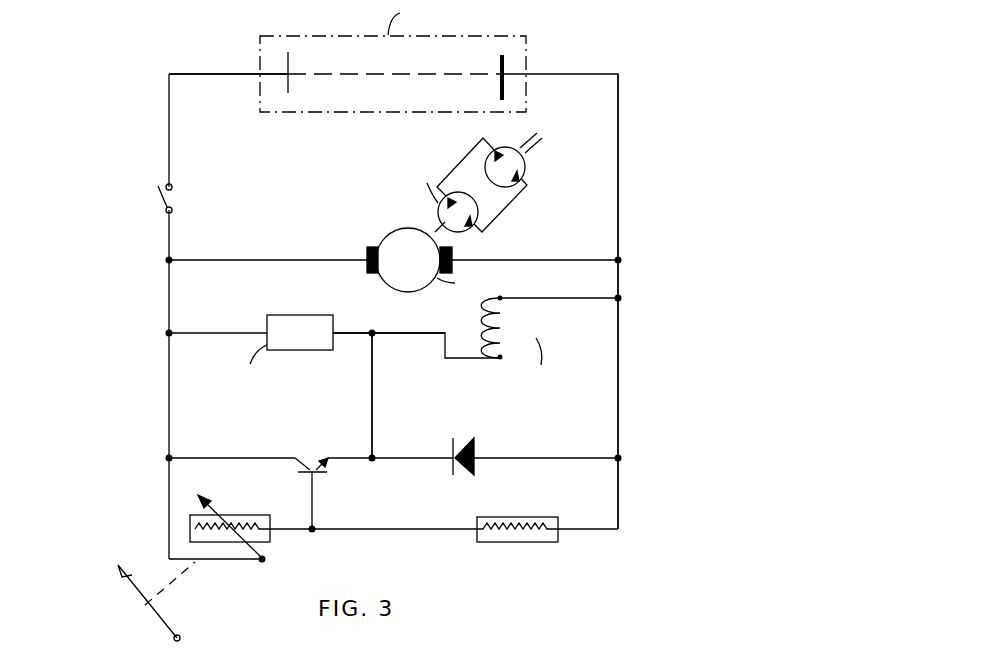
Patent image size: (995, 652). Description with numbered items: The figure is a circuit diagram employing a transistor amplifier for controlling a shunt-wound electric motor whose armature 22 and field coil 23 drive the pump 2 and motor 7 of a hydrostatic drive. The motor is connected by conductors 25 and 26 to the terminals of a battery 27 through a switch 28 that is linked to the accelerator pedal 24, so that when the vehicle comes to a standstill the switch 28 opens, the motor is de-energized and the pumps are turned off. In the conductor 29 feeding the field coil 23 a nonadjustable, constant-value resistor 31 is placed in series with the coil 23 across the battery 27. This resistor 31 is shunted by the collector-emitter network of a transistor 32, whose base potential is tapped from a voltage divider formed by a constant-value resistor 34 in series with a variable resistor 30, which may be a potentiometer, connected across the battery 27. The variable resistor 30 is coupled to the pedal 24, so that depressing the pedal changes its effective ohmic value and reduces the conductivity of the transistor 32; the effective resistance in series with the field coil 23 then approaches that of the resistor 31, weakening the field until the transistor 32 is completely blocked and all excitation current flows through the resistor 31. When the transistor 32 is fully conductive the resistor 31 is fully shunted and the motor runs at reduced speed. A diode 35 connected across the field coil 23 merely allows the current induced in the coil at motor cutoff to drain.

The pump 2 is at (463, 230).
The motor 7 is at (525, 160).
The motor armature 22 is at (395, 230).
The field coil 23 is at (502, 330).
The accelerator pedal 24 is at (135, 598).
The conductor 25 is at (618, 180).
The conductor 26 is at (220, 74).
The battery 27 is at (326, 105).
The switch 28 is at (160, 203).
The conductor 29 is at (352, 332).
The variable resistor 30 is at (238, 516).
The nonadjustable resistor 31 is at (285, 315).
The transistor 32 is at (303, 463).
The resistor 34 is at (518, 542).
The diode 35 is at (475, 445).